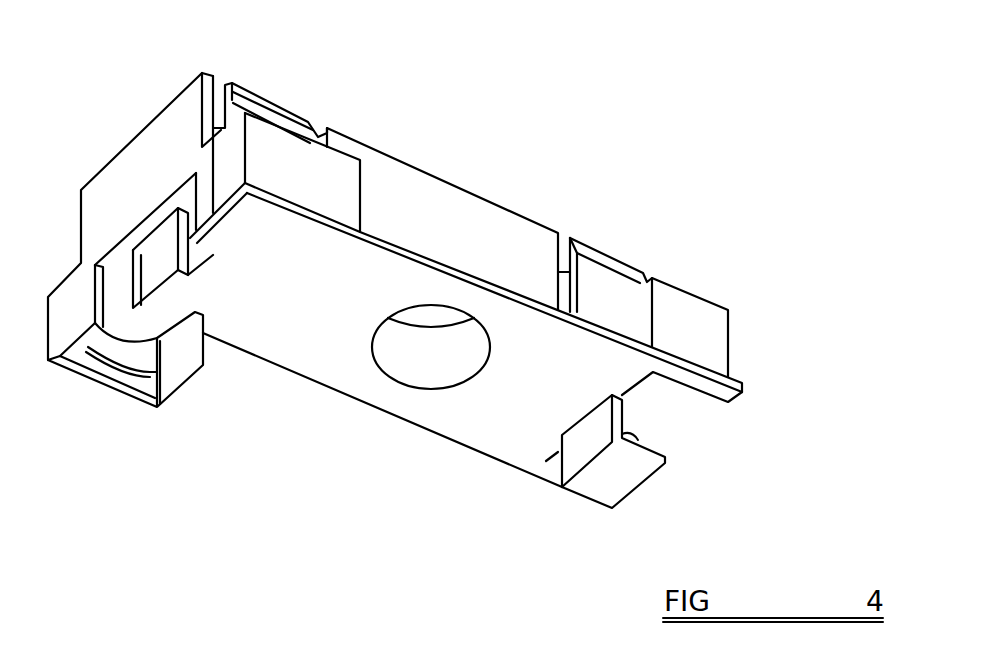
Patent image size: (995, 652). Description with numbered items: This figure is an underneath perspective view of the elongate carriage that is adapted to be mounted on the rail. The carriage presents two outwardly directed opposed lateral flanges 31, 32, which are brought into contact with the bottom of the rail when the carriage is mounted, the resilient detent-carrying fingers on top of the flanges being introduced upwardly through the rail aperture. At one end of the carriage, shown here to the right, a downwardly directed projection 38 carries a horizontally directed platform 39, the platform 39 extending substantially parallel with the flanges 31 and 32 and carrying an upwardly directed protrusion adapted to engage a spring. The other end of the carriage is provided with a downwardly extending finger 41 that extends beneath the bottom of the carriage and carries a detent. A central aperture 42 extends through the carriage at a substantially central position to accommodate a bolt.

The lateral flange 31 is at (423, 427).
The lateral flange 32 is at (497, 287).
The downwardly directed projection 38 is at (596, 444).
The platform 39 is at (628, 479).
The downwardly extending finger 41 is at (157, 248).
The central aperture 42 is at (431, 337).